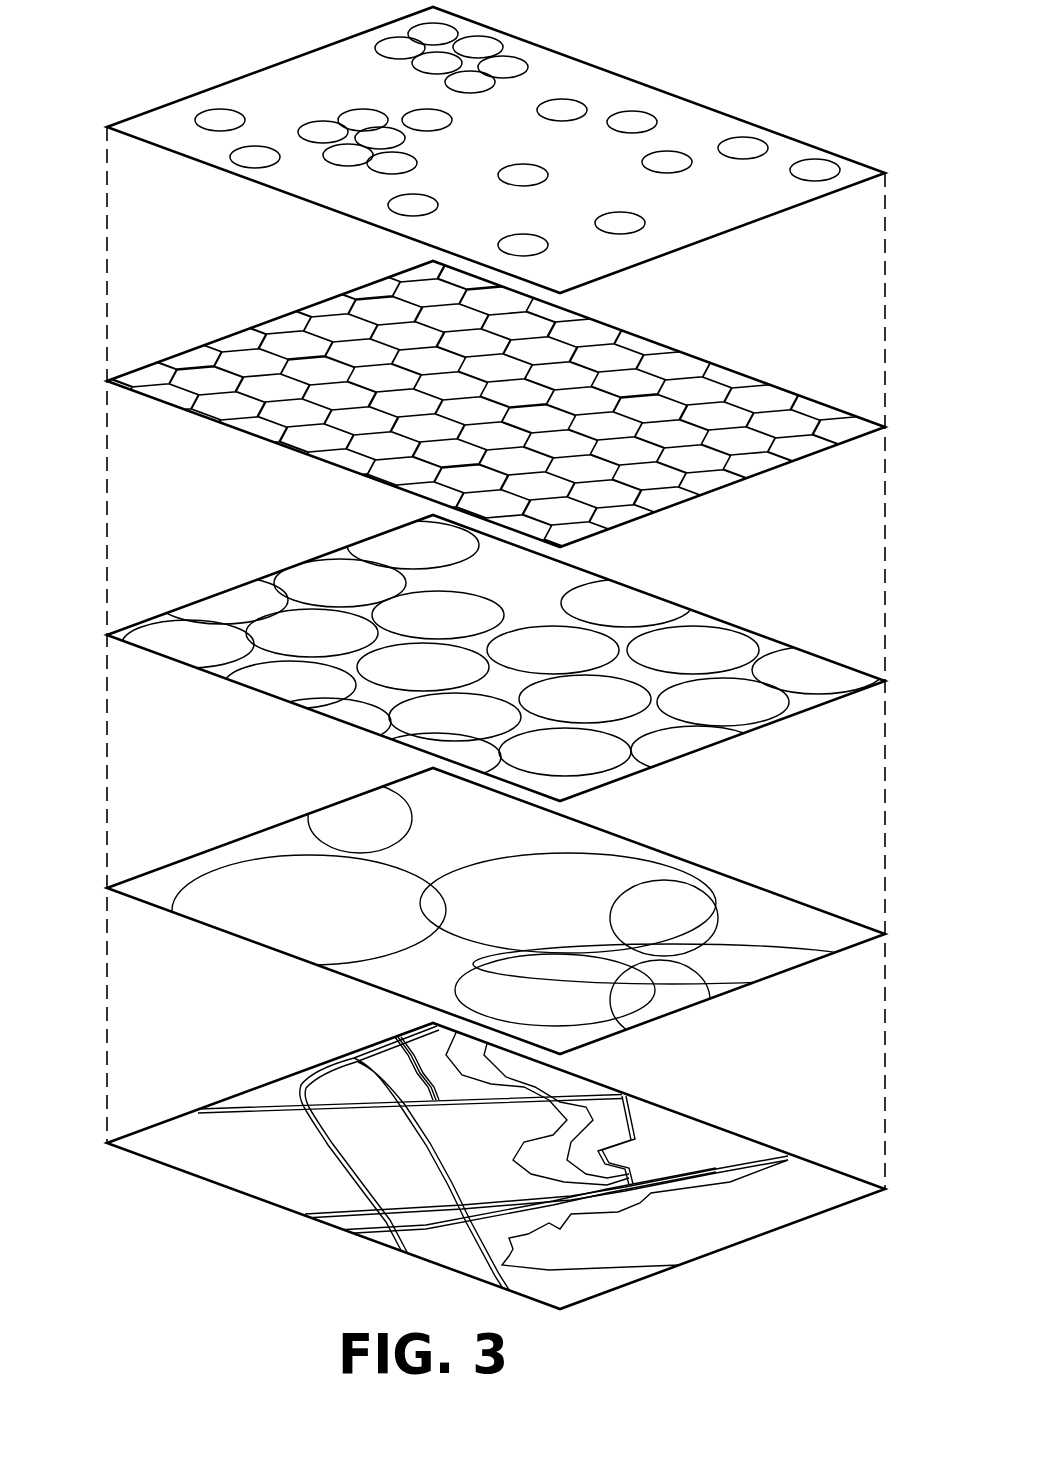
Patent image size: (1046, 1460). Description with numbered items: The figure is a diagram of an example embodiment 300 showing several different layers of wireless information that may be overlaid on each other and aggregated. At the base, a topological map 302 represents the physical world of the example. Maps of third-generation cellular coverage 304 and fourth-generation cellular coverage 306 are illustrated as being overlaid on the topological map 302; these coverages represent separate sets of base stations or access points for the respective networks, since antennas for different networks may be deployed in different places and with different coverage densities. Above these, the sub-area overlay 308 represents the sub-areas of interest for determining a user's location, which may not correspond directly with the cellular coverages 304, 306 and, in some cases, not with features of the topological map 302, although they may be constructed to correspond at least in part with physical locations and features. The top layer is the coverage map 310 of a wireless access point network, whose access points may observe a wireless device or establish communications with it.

The example embodiment 300 is at (183, 1193).
The topological map 302 is at (793, 1227).
The 3G cellular coverage 304 is at (773, 975).
The 4G cellular coverage 306 is at (780, 722).
The sub-area overlay 308 is at (780, 468).
The wireless access point coverage map 310 is at (780, 214).